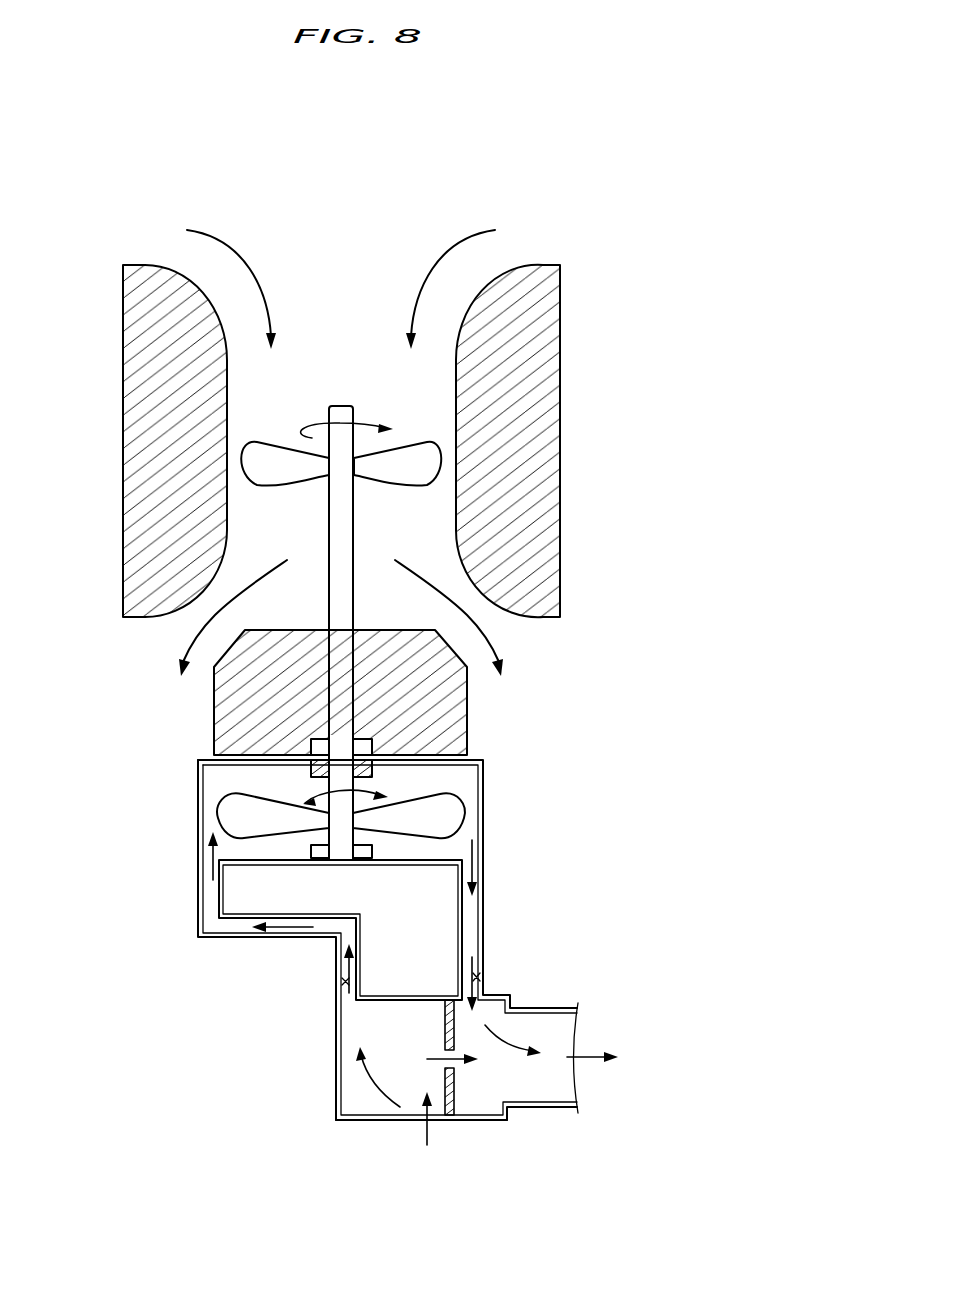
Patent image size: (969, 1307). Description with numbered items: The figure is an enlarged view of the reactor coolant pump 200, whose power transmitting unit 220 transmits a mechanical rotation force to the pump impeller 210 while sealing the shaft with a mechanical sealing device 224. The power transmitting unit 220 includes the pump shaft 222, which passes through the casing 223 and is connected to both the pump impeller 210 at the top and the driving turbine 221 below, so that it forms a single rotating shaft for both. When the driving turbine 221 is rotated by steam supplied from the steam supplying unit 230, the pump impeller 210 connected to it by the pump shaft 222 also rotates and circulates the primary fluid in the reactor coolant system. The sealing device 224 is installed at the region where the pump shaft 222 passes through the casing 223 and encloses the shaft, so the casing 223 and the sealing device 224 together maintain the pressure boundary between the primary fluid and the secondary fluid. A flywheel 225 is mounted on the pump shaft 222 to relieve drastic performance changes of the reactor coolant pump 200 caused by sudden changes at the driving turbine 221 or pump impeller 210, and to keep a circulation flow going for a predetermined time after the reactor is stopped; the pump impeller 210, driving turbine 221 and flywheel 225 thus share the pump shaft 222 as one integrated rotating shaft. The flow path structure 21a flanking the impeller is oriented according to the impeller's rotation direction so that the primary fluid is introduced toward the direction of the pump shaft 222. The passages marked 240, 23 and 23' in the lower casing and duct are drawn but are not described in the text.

The reactor coolant pump 200 is at (648, 160).
The flow path structure 21a is at (147, 337).
The pump impeller 210 is at (417, 457).
The power transmitting unit 220 is at (628, 627).
The driving turbine 221 is at (423, 815).
The pump shaft 222 is at (342, 667).
The casing 223 is at (198, 858).
The sealing device 224 is at (325, 772).
The flywheel 225 is at (235, 701).
The steam supplying unit 230 is at (345, 982).
The second passage 240 is at (480, 977).
The exhaust duct 23 is at (421, 1151).
The guide plate 23' is at (466, 1091).